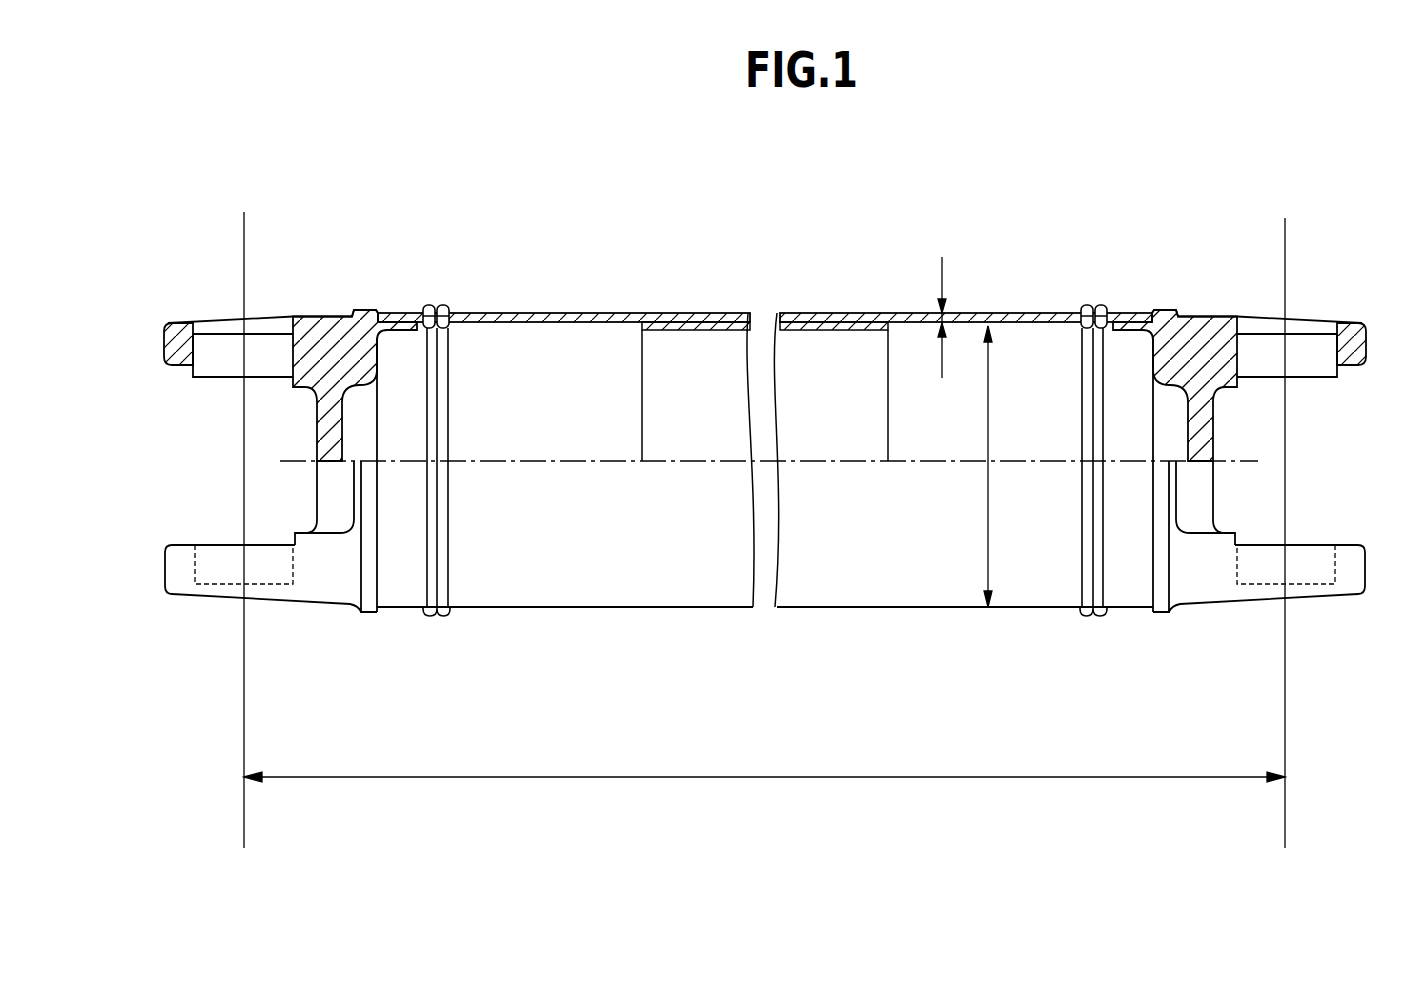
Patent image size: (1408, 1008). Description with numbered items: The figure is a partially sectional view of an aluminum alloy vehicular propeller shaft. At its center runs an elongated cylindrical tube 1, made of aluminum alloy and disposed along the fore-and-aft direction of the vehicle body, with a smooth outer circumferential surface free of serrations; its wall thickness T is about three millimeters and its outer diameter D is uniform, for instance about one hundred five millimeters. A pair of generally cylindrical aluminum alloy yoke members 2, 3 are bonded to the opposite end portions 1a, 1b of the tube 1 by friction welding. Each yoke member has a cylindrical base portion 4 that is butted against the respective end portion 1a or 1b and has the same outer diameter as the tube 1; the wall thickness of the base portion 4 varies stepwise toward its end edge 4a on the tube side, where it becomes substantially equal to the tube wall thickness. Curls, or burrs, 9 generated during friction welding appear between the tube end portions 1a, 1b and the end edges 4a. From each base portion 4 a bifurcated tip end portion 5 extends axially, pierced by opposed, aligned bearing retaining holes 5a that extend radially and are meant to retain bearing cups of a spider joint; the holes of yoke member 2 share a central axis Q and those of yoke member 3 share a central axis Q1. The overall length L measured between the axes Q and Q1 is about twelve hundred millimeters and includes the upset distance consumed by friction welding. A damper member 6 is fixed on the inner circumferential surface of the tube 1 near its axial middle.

The tube 1 is at (533, 300).
The end portion of tube 1a is at (452, 308).
The end portion of tube 1b is at (1073, 310).
The yoke member 2 is at (322, 298).
The yoke member 3 is at (1205, 298).
The cylindrical base portion 4 is at (363, 328).
The end edge 4a is at (418, 308).
The bifurcated tip end portion 5 is at (177, 335).
The bearing retaining hole 5a is at (258, 352).
The damper member 6 is at (672, 313).
The curl 9 is at (437, 616).
The central axis of bearing retaining holes Q is at (243, 267).
The central axis of bearing retaining holes Q1 is at (1285, 247).
The wall thickness of tube T is at (933, 314).
The outer diameter of tube D is at (992, 480).
The overall length L is at (764, 764).